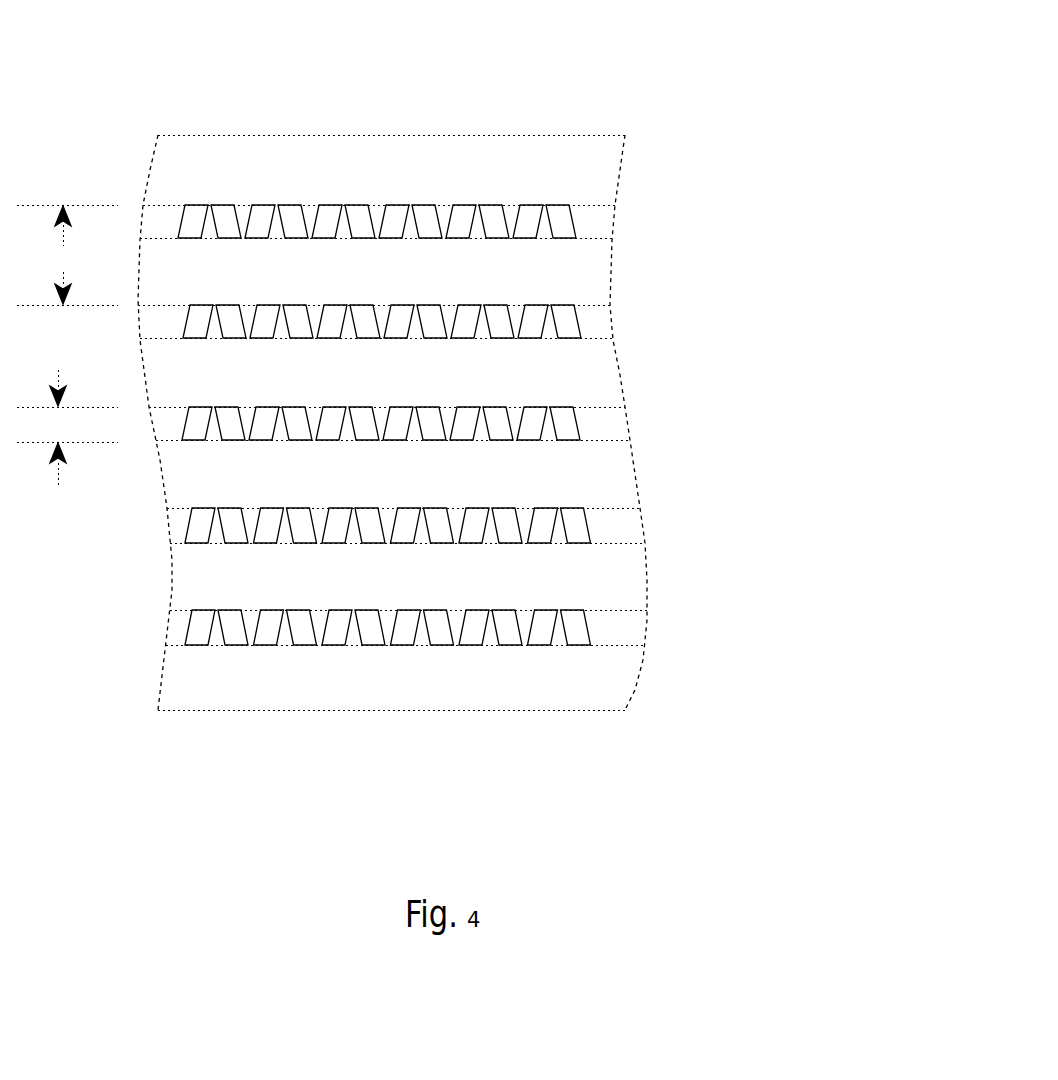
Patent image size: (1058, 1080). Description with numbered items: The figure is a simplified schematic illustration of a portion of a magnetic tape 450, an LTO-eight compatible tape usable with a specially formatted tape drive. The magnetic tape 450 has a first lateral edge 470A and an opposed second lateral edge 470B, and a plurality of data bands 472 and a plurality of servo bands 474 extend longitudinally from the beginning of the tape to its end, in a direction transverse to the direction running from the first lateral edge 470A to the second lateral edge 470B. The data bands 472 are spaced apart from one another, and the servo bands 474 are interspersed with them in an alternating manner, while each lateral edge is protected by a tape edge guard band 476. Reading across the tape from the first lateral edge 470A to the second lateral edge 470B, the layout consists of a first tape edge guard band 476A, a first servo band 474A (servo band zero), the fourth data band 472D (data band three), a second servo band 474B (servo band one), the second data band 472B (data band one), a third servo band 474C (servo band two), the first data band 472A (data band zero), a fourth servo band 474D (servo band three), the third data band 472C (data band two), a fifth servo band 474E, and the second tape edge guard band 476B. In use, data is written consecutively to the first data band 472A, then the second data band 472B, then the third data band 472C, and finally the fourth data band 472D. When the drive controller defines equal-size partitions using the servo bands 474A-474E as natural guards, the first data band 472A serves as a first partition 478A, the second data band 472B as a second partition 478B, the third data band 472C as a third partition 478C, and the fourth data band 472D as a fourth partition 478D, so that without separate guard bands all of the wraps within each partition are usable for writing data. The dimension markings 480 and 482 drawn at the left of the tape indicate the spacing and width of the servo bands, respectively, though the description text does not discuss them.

The magnetic tape 450 is at (590, 70).
The first lateral edge 470A is at (391, 90).
The second lateral edge 470B is at (391, 765).
The data bands 472 is at (349, 577).
The servo bands 474 is at (347, 628).
The tape edge guard band 476 is at (342, 678).
The servo band spacing 480 is at (67, 256).
The servo band width 482 is at (67, 427).
The first tape edge guard band 476A is at (449, 171).
The second tape edge guard band 476B is at (464, 678).
The first servo band 474A is at (519, 221).
The second servo band 474B is at (521, 322).
The third servo band 474C is at (533, 423).
The fourth servo band 474D is at (551, 526).
The fifth servo band 474E is at (550, 628).
The first data band 472A is at (533, 475).
The second data band 472B is at (518, 373).
The third data band 472C is at (547, 577).
The fourth data band 472D is at (513, 271).
The first partition 478A is at (531, 490).
The second partition 478B is at (513, 387).
The third partition 478C is at (537, 593).
The fourth partition 478D is at (503, 285).